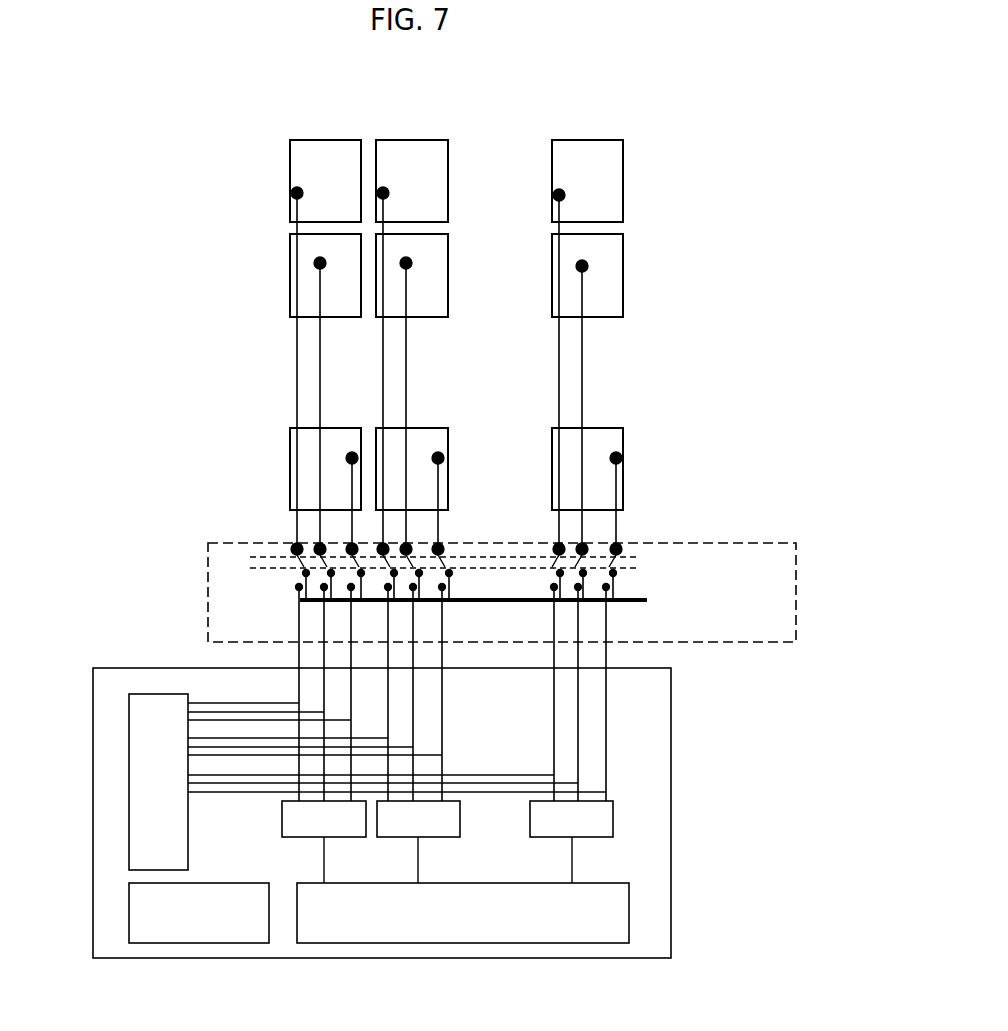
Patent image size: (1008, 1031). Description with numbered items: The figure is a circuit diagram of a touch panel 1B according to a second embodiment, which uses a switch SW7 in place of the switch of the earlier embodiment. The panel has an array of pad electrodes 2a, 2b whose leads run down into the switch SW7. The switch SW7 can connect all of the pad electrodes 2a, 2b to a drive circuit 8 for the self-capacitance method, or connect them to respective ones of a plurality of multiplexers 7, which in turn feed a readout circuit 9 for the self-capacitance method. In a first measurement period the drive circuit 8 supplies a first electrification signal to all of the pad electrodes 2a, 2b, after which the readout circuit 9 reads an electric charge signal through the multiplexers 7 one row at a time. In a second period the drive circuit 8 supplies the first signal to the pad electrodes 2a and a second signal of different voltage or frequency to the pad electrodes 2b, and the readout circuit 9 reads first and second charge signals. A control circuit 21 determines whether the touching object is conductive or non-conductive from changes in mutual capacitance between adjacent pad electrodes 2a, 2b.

The touch panel 1B is at (640, 110).
The pad electrodes 2a is at (290, 183).
The pad electrodes 2b is at (448, 183).
The switch SW7 is at (797, 580).
The multiplexers 7 is at (282, 822).
The drive circuit 8 is at (129, 784).
The readout circuit 9 is at (425, 944).
The control circuit 21 is at (196, 944).